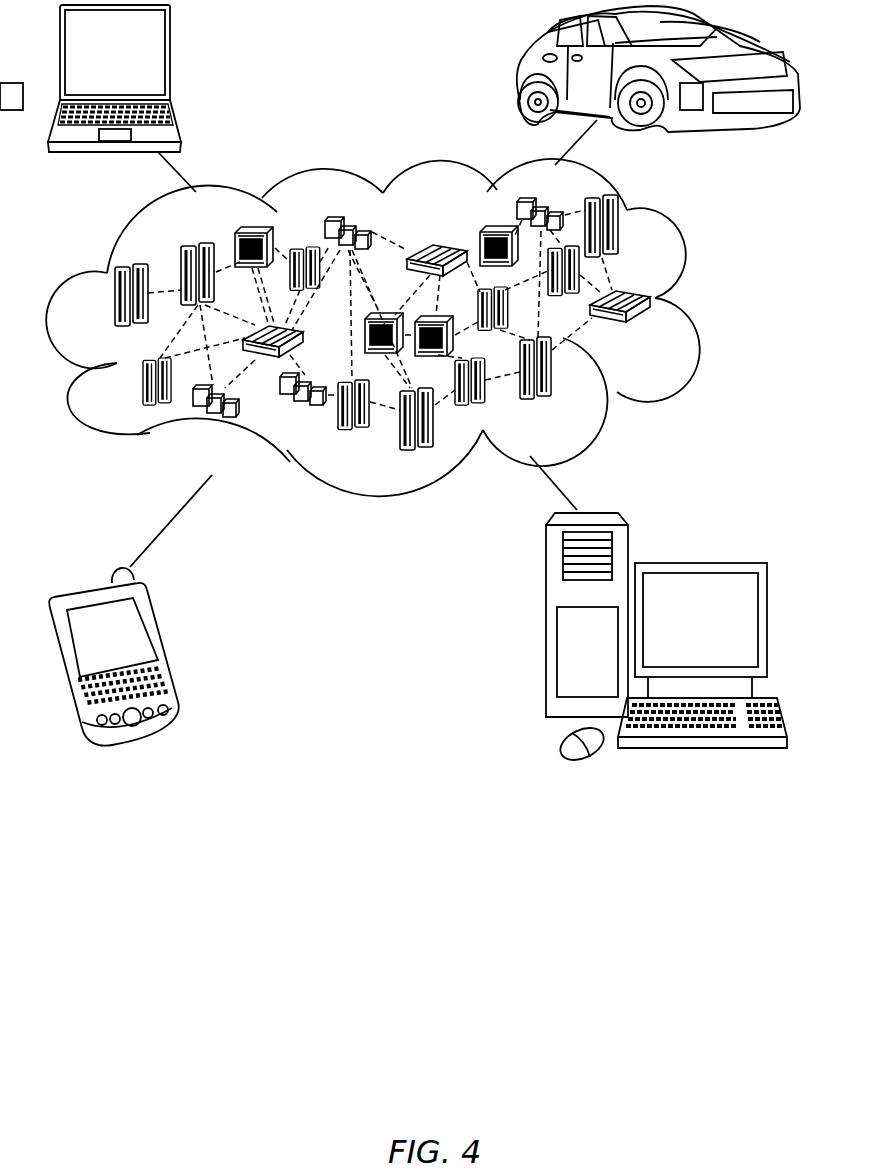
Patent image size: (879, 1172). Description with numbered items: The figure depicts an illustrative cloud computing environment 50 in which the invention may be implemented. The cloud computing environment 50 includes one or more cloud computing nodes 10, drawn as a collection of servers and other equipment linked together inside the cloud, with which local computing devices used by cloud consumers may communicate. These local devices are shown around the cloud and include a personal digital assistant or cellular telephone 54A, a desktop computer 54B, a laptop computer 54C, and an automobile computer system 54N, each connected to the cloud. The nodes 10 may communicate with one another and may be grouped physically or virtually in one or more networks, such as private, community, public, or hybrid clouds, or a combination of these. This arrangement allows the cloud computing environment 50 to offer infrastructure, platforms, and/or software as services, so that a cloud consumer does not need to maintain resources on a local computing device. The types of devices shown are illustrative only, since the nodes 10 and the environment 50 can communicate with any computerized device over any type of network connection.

The laptop computer 54C is at (171, 62).
The automobile computer system 54N is at (520, 72).
The personal digital assistant (PDA) or cellular telephone 54A is at (162, 647).
The desktop computer 54B is at (697, 563).
The cloud computing environment 50 is at (699, 299).
The cloud computing node 10 is at (662, 336).